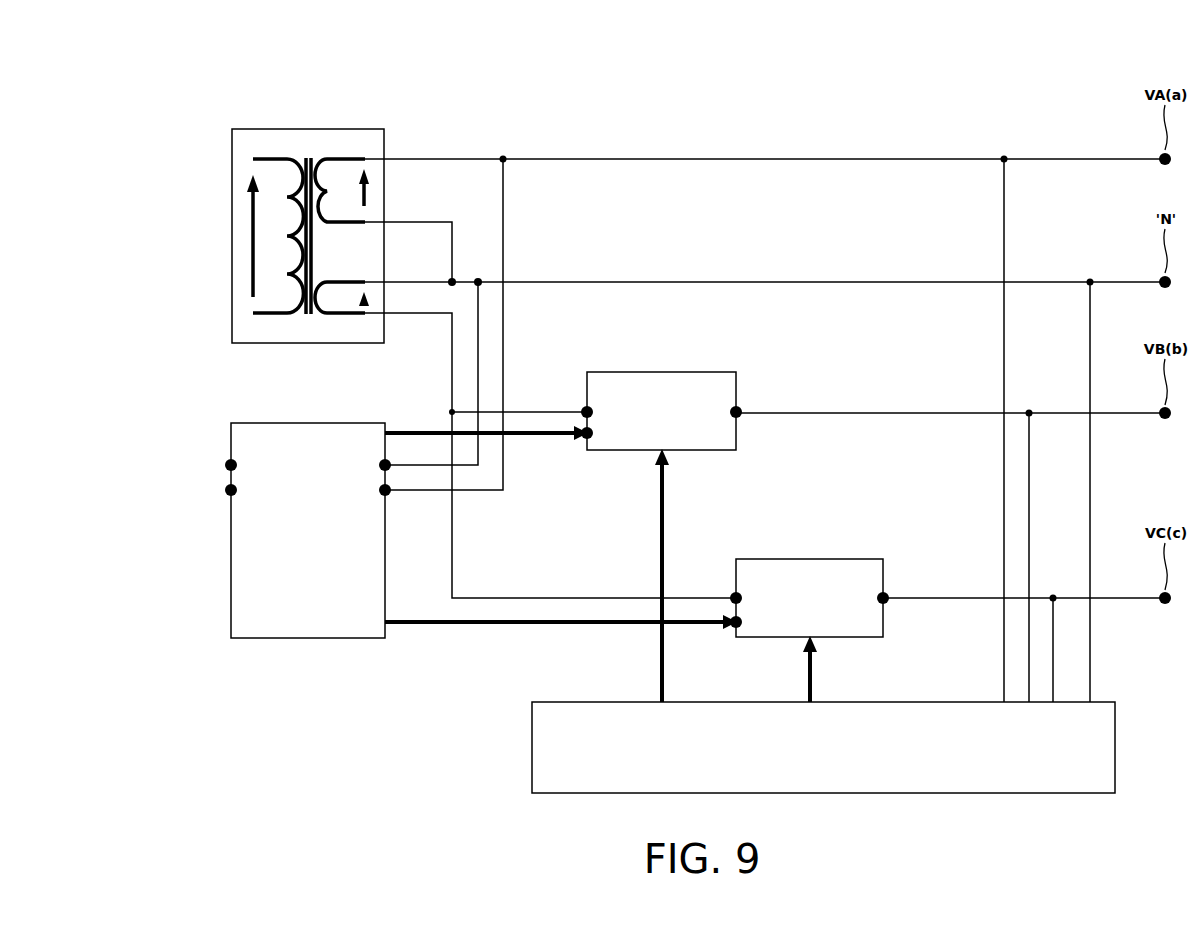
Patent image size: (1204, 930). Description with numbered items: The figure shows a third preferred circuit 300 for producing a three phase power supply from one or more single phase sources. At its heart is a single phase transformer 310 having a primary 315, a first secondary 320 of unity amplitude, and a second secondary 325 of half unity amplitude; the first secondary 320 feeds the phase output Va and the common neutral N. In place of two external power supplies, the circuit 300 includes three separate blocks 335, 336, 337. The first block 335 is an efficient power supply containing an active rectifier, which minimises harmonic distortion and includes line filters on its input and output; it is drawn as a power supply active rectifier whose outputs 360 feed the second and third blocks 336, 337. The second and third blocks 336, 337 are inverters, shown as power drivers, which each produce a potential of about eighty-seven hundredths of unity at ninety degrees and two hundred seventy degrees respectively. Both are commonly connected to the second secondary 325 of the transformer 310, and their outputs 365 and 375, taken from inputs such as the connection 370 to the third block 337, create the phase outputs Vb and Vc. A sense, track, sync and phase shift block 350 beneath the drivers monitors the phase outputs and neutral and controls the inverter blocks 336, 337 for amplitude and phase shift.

The third preferred circuit 300 is at (739, 126).
The transformer 310 is at (307, 127).
The primary 315 is at (285, 220).
The first secondary 320 is at (333, 173).
The second secondary 325 is at (333, 298).
The first block 335 is at (225, 477).
The second block 336 is at (662, 370).
The third block 337 is at (810, 556).
The sense/track/sync/phase shift circuit 350 is at (930, 698).
The power supply output 360 is at (392, 477).
The first power driver output 365 is at (741, 406).
The second power driver input 370 is at (732, 594).
The second power driver output 375 is at (886, 594).